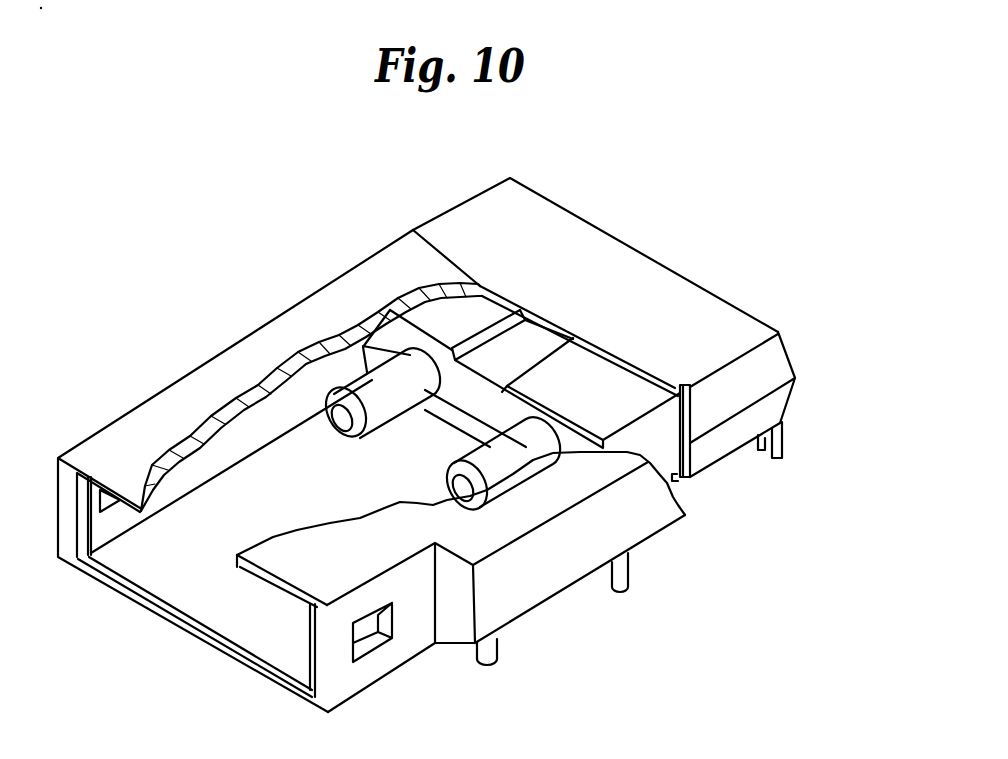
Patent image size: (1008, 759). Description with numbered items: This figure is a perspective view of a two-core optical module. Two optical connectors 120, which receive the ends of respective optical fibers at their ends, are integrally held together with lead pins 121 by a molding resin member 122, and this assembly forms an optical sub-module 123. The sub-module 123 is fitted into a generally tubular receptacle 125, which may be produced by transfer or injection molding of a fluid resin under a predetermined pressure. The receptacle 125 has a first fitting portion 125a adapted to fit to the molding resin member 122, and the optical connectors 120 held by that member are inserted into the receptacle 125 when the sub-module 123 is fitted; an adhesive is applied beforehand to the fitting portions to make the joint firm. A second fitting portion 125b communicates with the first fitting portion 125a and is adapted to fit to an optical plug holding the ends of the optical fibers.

The optical connectors 120 is at (480, 455).
The lead pins 121 is at (783, 452).
The molding resin member 122 is at (467, 218).
The optical sub-module 123 is at (662, 245).
The receptacle 125 is at (211, 348).
The first fitting portion 125a is at (392, 255).
The second fitting portion 125b is at (163, 589).